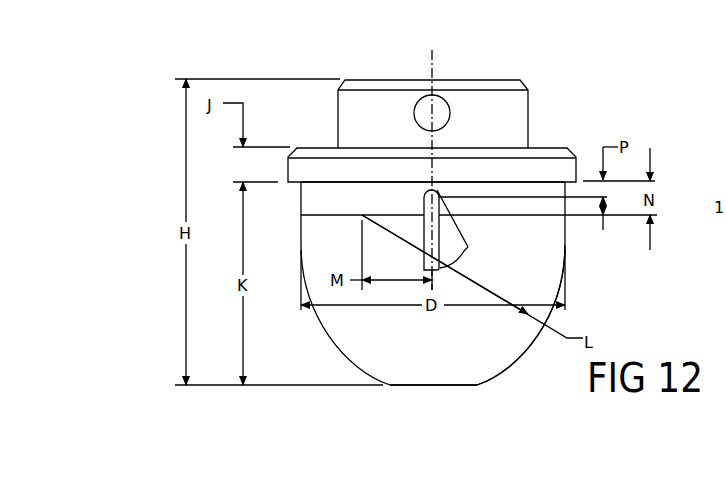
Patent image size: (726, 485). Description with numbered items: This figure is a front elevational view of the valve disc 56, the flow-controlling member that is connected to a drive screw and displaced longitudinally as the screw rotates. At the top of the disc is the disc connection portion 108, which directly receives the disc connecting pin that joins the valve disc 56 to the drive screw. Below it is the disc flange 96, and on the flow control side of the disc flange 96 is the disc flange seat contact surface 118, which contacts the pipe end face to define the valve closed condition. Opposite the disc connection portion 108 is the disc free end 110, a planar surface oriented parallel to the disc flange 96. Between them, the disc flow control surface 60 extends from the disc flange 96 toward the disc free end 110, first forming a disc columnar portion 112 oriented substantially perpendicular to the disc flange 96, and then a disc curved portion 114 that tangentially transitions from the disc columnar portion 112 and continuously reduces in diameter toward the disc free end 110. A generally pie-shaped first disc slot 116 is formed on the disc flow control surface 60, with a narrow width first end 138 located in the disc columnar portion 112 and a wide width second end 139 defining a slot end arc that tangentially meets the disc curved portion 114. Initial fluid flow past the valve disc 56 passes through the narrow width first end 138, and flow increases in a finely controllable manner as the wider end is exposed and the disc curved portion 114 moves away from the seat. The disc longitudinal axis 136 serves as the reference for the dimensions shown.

The valve disc 56 is at (566, 101).
The disc flow control surface 60 is at (330, 333).
The disc flange 96 is at (553, 167).
The disc connection portion 108 is at (345, 124).
The disc free end 110 is at (430, 387).
The disc columnar portion 112 is at (333, 208).
The disc curved portion 114 is at (512, 362).
The first disc slot 116 is at (453, 233).
The disc flange seat contact surface 118 is at (314, 186).
The disc longitudinal axis 136 is at (430, 55).
The narrow width first end 138 is at (428, 188).
The wide width second end 139 is at (468, 260).